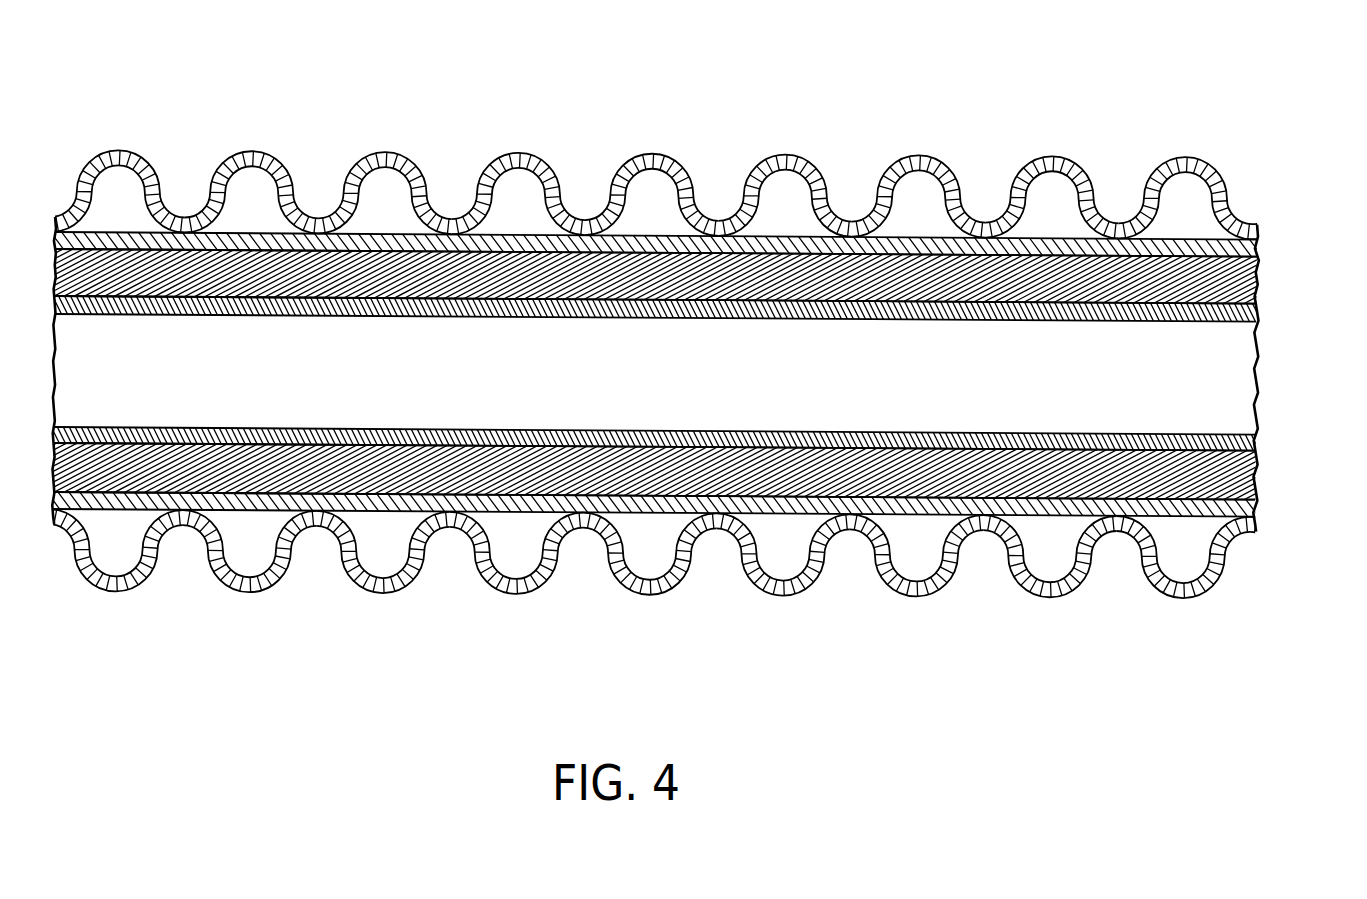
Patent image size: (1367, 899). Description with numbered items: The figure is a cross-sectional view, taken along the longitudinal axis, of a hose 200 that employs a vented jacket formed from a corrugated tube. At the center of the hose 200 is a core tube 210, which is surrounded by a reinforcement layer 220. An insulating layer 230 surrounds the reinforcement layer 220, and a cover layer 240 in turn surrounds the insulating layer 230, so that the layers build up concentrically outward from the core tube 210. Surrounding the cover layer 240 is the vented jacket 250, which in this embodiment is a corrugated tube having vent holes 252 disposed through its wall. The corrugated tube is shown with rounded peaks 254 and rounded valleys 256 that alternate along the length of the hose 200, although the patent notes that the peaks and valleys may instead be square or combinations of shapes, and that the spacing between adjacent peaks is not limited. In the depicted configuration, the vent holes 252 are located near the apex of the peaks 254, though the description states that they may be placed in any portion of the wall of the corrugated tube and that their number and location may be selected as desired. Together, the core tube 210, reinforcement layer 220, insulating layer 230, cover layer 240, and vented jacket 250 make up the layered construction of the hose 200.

The hose 200 is at (806, 68).
The core tube 210 is at (1175, 322).
The reinforcement layer 220 is at (1256, 322).
The insulating layer 230 is at (1250, 284).
The cover layer 240 is at (1248, 249).
The vented jacket 250 is at (1080, 160).
The vent holes 252 is at (1053, 160).
The rounded peaks 254 is at (913, 150).
The rounded valleys 256 is at (855, 218).